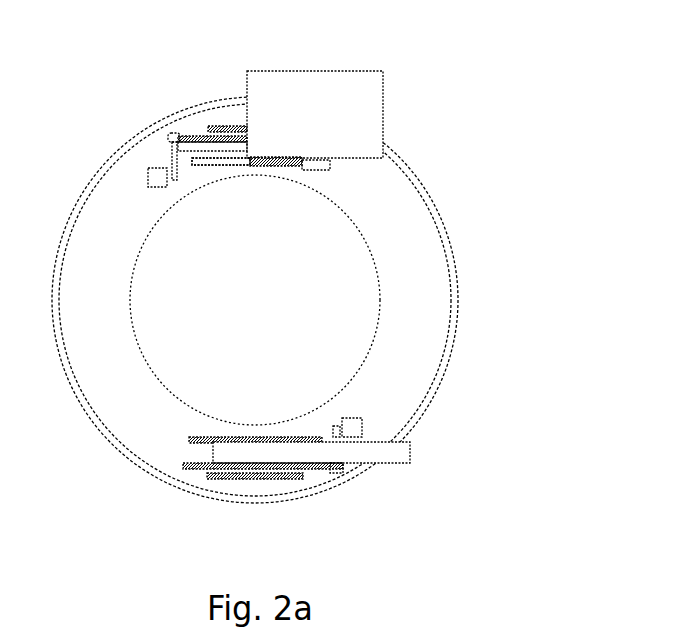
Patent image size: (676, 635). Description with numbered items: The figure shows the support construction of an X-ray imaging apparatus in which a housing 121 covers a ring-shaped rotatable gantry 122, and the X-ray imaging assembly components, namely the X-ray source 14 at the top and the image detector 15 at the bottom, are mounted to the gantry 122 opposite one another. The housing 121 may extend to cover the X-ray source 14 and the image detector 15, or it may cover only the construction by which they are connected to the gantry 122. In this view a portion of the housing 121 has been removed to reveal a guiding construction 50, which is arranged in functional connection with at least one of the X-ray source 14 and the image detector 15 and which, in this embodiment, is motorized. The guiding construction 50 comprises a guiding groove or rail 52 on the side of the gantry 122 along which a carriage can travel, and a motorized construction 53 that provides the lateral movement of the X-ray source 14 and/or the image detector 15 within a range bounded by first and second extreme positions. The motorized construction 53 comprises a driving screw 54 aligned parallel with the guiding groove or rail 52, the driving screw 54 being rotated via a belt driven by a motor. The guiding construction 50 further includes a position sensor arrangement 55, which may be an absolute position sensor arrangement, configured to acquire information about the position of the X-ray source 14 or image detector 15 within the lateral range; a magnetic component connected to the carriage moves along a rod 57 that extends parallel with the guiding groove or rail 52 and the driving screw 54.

The X-ray source 14 is at (378, 108).
The image detector 15 is at (400, 453).
The guiding construction 50 is at (188, 290).
The guiding groove or rail 52 is at (227, 126).
The motorized construction 53 is at (148, 155).
The driving screw 54 is at (230, 151).
The position sensor arrangement 55 is at (172, 121).
The rod 57 is at (200, 136).
The housing 121 is at (452, 248).
The gantry 122 is at (435, 318).